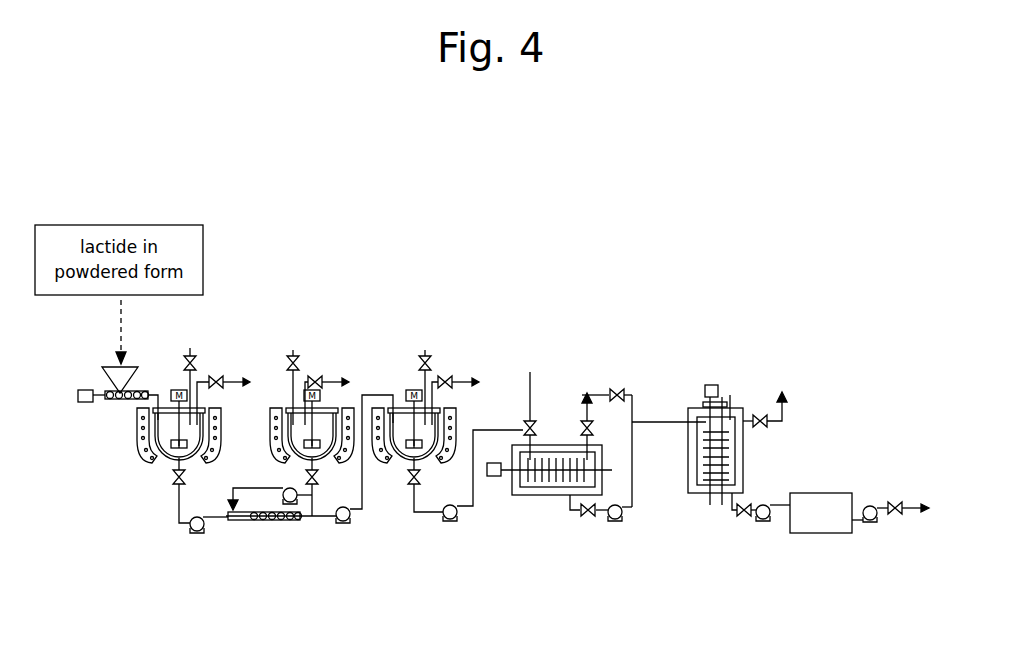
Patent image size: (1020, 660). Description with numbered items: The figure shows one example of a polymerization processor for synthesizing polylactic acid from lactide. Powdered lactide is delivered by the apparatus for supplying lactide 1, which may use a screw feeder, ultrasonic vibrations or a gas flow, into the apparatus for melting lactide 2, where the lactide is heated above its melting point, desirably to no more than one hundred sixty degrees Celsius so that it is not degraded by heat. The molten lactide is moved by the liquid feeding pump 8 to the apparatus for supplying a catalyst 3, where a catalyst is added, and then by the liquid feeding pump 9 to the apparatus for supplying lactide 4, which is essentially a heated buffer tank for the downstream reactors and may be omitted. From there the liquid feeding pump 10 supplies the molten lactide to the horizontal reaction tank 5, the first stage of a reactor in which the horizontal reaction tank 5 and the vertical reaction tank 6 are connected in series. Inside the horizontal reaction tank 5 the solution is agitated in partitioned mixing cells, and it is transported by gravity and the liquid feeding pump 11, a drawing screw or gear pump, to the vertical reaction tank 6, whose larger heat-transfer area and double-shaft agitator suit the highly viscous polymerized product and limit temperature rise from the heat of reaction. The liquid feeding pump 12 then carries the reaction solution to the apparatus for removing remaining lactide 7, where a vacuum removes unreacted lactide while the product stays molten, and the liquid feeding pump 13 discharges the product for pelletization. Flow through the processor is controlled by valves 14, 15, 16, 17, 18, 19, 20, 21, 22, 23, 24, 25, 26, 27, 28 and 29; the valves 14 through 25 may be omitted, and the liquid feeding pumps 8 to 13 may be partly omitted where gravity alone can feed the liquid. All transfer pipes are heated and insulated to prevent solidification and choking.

The apparatus for supplying lactide 1 is at (121, 395).
The apparatus for melting lactide 2 is at (143, 456).
The apparatus for supplying a catalyst 3 is at (237, 522).
The apparatus for supplying lactide 4 is at (402, 458).
The horizontal reaction tank 5 is at (543, 497).
The vertical reaction tank 6 is at (688, 462).
The apparatus for removing remaining lactide 7 is at (823, 534).
The liquid feeding pump 8 is at (200, 535).
The liquid feeding pump 9 is at (345, 525).
The liquid feeding pump 10 is at (455, 525).
The liquid feeding pump 11 is at (618, 524).
The liquid feeding pump 12 is at (765, 527).
The liquid feeding pump 13 is at (873, 527).
The valve 14 is at (172, 479).
The valve 15 is at (307, 504).
The valve 16 is at (410, 488).
The valve 17 is at (588, 520).
The valve 18 is at (732, 510).
The valve 19 is at (895, 500).
The valve 20 is at (198, 363).
The valve 21 is at (212, 375).
The valve 22 is at (300, 361).
The valve 23 is at (318, 375).
The valve 24 is at (418, 359).
The valve 25 is at (449, 375).
The valve 26 is at (523, 428).
The valve 27 is at (578, 428).
The valve 28 is at (620, 387).
The valve 29 is at (760, 413).